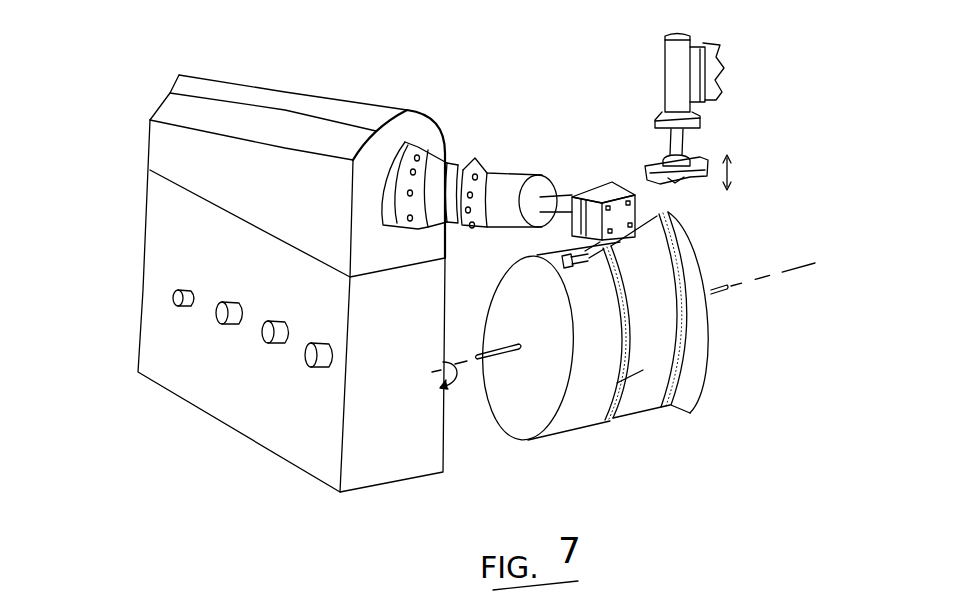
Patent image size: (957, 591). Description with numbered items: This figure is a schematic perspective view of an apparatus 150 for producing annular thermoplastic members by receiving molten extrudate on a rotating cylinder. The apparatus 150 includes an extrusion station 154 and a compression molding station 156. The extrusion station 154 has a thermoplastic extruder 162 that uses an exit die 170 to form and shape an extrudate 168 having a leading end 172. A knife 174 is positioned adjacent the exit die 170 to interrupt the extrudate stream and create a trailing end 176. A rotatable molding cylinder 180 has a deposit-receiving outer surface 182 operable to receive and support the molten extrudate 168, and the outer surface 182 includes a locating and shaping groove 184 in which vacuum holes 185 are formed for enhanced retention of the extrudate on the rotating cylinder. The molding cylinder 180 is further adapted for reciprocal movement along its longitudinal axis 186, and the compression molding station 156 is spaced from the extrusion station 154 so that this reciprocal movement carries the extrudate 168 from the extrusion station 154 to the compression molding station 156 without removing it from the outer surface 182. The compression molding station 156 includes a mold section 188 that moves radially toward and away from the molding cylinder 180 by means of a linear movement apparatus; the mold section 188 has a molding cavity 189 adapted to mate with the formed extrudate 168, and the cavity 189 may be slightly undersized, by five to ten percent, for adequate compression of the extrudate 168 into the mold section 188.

The apparatus 150 is at (463, 95).
The extrusion station 154 is at (573, 167).
The compression molding station 156 is at (804, 73).
The thermoplastic extruder 162 is at (160, 267).
The extrudate 168 is at (608, 290).
The exit die 170 is at (597, 190).
The leading end 172 is at (628, 326).
The knife 174 is at (562, 247).
The trailing end 176 is at (672, 228).
The molding cylinder 180 is at (571, 417).
The deposit-receiving outer surface 182 is at (598, 395).
The locating and shaping groove 184 is at (620, 403).
The vacuum holes 185 is at (628, 356).
The longitudinal axis 186 is at (415, 378).
The mold section 188 is at (698, 158).
The molding cavity 189 is at (694, 174).